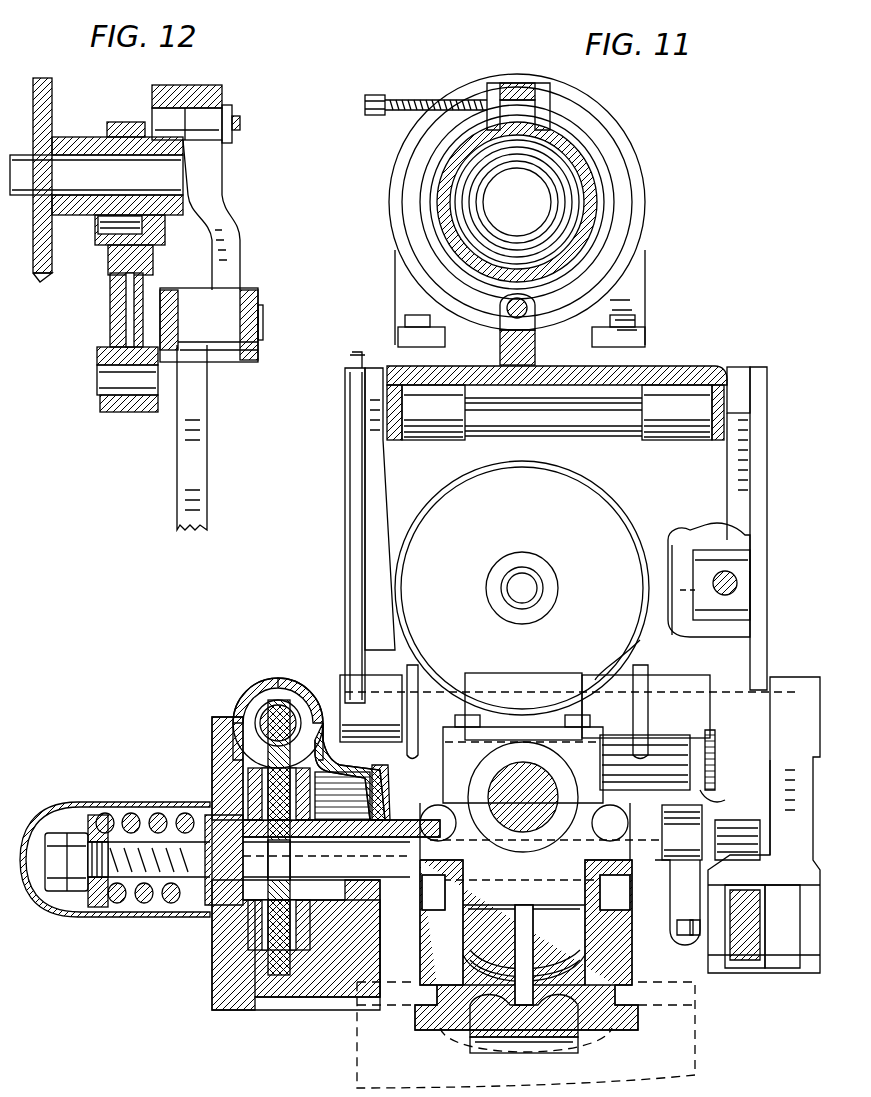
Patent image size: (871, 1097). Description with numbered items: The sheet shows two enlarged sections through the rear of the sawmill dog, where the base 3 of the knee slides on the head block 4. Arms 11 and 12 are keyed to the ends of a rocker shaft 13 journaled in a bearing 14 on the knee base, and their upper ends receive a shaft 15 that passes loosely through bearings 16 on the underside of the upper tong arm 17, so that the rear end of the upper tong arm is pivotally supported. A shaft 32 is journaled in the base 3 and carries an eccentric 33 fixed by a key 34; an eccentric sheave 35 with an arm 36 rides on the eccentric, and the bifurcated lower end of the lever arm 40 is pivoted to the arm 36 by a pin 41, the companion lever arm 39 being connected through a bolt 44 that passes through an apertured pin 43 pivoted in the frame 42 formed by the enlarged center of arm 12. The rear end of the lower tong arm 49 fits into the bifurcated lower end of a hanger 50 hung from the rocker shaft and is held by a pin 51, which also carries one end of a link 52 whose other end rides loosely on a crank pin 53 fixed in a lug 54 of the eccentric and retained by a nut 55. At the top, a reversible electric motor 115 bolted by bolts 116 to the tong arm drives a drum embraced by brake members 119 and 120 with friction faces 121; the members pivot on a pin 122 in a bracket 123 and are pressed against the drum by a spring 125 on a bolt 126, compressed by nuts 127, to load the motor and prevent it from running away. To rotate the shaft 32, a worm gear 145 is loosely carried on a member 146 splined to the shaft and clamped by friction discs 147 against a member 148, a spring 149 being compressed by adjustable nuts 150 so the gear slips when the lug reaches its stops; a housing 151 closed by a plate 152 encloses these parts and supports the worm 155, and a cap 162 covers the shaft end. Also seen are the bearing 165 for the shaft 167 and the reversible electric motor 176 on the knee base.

In FIG. 12, the base 3 is at (40, 278).
In FIG. 11, the base 3 is at (638, 968).
In FIG. 11, the head block 4 is at (688, 1040).
In FIG. 11, the arm 11 is at (350, 524).
In FIG. 11, the arm 12 is at (767, 494).
In FIG. 11, the rocker shaft 13 is at (487, 700).
In FIG. 11, the bearing 14 is at (535, 688).
In FIG. 11, the shaft 15 is at (560, 405).
In FIG. 11, the bearings 16 is at (432, 412).
In FIG. 11, the upper tong arm 17 is at (665, 366).
In FIG. 12, the shaft 32 is at (70, 152).
In FIG. 11, the shaft 32 is at (570, 850).
In FIG. 12, the eccentric 33 is at (108, 258).
In FIG. 12, the key 34 is at (95, 218).
In FIG. 12, the eccentric sheave 35 is at (120, 122).
In FIG. 11, the eccentric sheave 35 is at (700, 945).
In FIG. 12, the arm 36 is at (110, 318).
In FIG. 11, the arm 36 is at (682, 832).
In FIG. 11, the arm 39 is at (640, 640).
In FIG. 11, the arm 40 is at (710, 800).
In FIG. 12, the pin 41 is at (97, 378).
In FIG. 11, the frame 42 is at (690, 538).
In FIG. 11, the apertured pin 43 is at (748, 582).
In FIG. 12, the bolt 44 is at (100, 403).
In FIG. 11, the bolt 44 is at (738, 588).
In FIG. 12, the lower tong arm 49 is at (207, 410).
In FIG. 11, the lower tong arm 49 is at (745, 968).
In FIG. 12, the hanger 50 is at (258, 296).
In FIG. 11, the hanger 50 is at (785, 775).
In FIG. 12, the pin 51 is at (263, 328).
In FIG. 12, the link 52 is at (240, 242).
In FIG. 11, the link 52 is at (785, 968).
In FIG. 12, the crank pin 53 is at (210, 122).
In FIG. 12, the lug 54 is at (165, 82).
In FIG. 12, the nut 55 is at (242, 123).
In FIG. 11, the electric motor 115 is at (648, 210).
In FIG. 11, the bolts 116 is at (405, 316).
In FIG. 11, the brake member 119 is at (432, 186).
In FIG. 11, the brake member 120 is at (612, 178).
In FIG. 11, the friction faces 121 is at (455, 170).
In FIG. 11, the pin 122 is at (500, 322).
In FIG. 11, the bracket 123 is at (535, 352).
In FIG. 11, the spring 125 is at (436, 97).
In FIG. 11, the bolt 126 is at (518, 100).
In FIG. 11, the nuts 127 is at (378, 95).
In FIG. 11, the worm gear 145 is at (265, 755).
In FIG. 11, the member 146 is at (300, 924).
In FIG. 11, the friction discs 147 is at (262, 776).
In FIG. 11, the member 148 is at (255, 796).
In FIG. 11, the spring 149 is at (133, 815).
In FIG. 11, the adjustable nuts 150 is at (64, 833).
In FIG. 11, the housing 151 is at (312, 705).
In FIG. 11, the plate 152 is at (225, 940).
In FIG. 11, the worm 155 is at (283, 710).
In FIG. 11, the cap 162 is at (115, 918).
In FIG. 11, the bearing 165 is at (540, 728).
In FIG. 11, the shaft 167 is at (545, 780).
In FIG. 11, the electric motor 176 is at (585, 500).